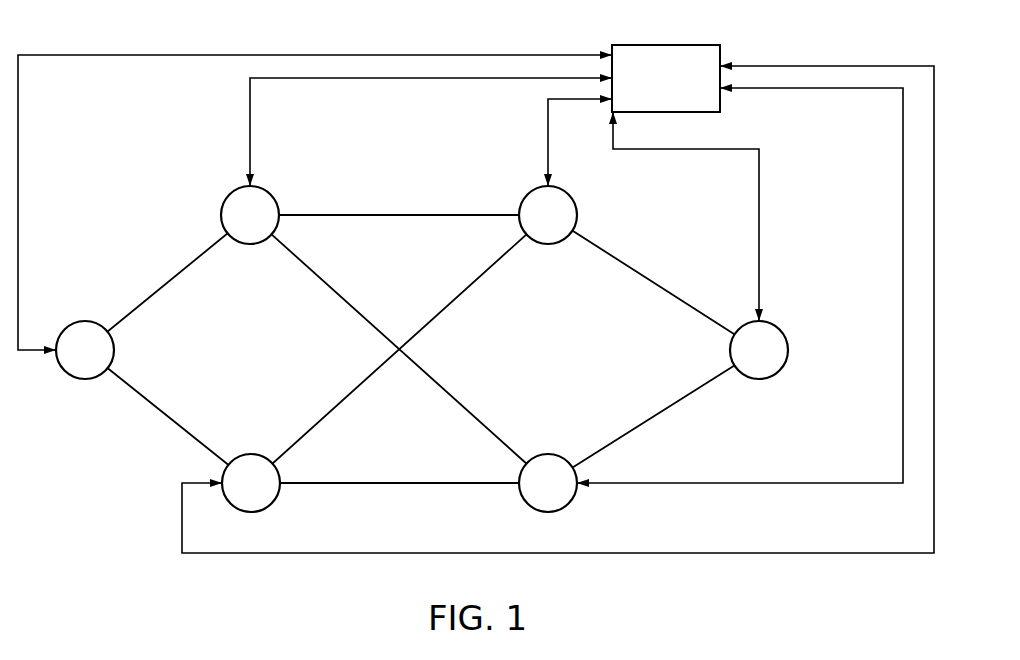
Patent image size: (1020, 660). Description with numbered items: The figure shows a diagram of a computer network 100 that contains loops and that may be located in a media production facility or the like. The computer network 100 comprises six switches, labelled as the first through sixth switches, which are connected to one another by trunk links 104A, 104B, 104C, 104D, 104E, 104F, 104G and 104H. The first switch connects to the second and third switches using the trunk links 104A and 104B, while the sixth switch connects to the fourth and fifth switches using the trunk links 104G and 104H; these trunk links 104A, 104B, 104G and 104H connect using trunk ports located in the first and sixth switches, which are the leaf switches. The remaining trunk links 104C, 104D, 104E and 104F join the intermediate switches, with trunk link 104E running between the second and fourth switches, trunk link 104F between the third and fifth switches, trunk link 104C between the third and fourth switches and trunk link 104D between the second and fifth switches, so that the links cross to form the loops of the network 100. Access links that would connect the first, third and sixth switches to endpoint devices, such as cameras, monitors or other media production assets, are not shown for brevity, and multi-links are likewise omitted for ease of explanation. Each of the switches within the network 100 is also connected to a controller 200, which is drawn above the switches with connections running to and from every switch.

The computer network 100 is at (800, 268).
The controller 200 is at (642, 92).
The trunk link 104A is at (180, 277).
The trunk link 104B is at (152, 400).
The trunk link 104C is at (347, 393).
The trunk link 104D is at (337, 285).
The trunk link 104E is at (422, 193).
The trunk link 104F is at (393, 482).
The trunk link 104G is at (642, 270).
The trunk link 104H is at (672, 407).